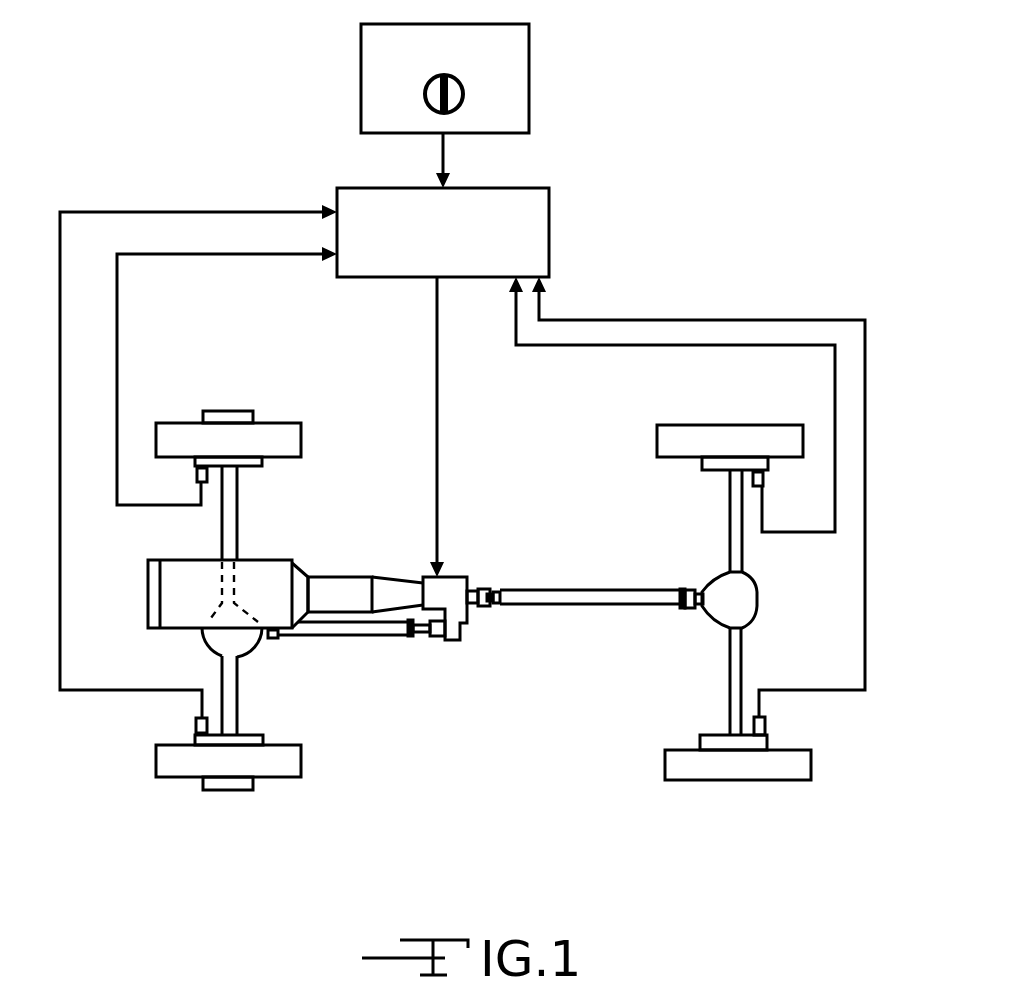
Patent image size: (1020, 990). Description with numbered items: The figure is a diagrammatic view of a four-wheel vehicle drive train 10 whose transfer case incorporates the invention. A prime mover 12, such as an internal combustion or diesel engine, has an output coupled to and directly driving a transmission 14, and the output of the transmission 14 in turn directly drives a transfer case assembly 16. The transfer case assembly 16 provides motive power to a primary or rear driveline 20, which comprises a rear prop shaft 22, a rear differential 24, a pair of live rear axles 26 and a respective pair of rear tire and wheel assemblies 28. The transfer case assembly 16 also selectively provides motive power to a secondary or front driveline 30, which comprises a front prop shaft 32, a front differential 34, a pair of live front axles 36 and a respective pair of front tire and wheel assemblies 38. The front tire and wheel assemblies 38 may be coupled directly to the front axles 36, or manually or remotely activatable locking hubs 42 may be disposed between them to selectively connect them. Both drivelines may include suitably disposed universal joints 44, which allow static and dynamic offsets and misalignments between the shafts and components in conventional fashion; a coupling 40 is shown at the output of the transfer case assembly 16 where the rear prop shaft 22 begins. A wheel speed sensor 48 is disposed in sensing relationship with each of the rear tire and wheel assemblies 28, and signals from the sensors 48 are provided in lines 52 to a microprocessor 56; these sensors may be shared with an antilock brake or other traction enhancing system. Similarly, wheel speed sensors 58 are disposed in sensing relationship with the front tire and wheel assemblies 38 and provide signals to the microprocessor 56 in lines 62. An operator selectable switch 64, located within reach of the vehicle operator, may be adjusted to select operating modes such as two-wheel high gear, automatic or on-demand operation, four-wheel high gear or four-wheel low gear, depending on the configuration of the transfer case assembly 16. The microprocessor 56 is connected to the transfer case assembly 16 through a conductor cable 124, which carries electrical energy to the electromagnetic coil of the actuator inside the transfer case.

The four-wheel vehicle drive train 10 is at (405, 842).
The prime mover 12 is at (177, 616).
The transmission 14 is at (328, 580).
The transfer case assembly 16 is at (415, 562).
The primary or rear driveline 20 is at (560, 481).
The primary or rear prop shaft 22 is at (632, 590).
The primary or rear differential 24 is at (745, 600).
The primary or rear axles 26 is at (729, 512).
The primary or rear tire and wheel assemblies 28 is at (666, 408).
The secondary or front driveline 30 is at (331, 731).
The secondary or front prop shaft 32 is at (343, 636).
The secondary or front differential 34 is at (250, 645).
The secondary or front axles 36 is at (237, 518).
The secondary or front tire and wheel assemblies 38 is at (244, 369).
The coupling 40 is at (482, 588).
The locking hubs 42 is at (205, 410).
The universal joints 44 is at (415, 642).
The wheel speed sensor 48 is at (763, 478).
The lines 52 is at (770, 348).
The microprocessor 56 is at (517, 188).
The wheel speed sensors 58 is at (195, 474).
The lines 62 is at (117, 297).
The operator selectable switch 64 is at (530, 42).
The conductor cable 124 is at (437, 368).